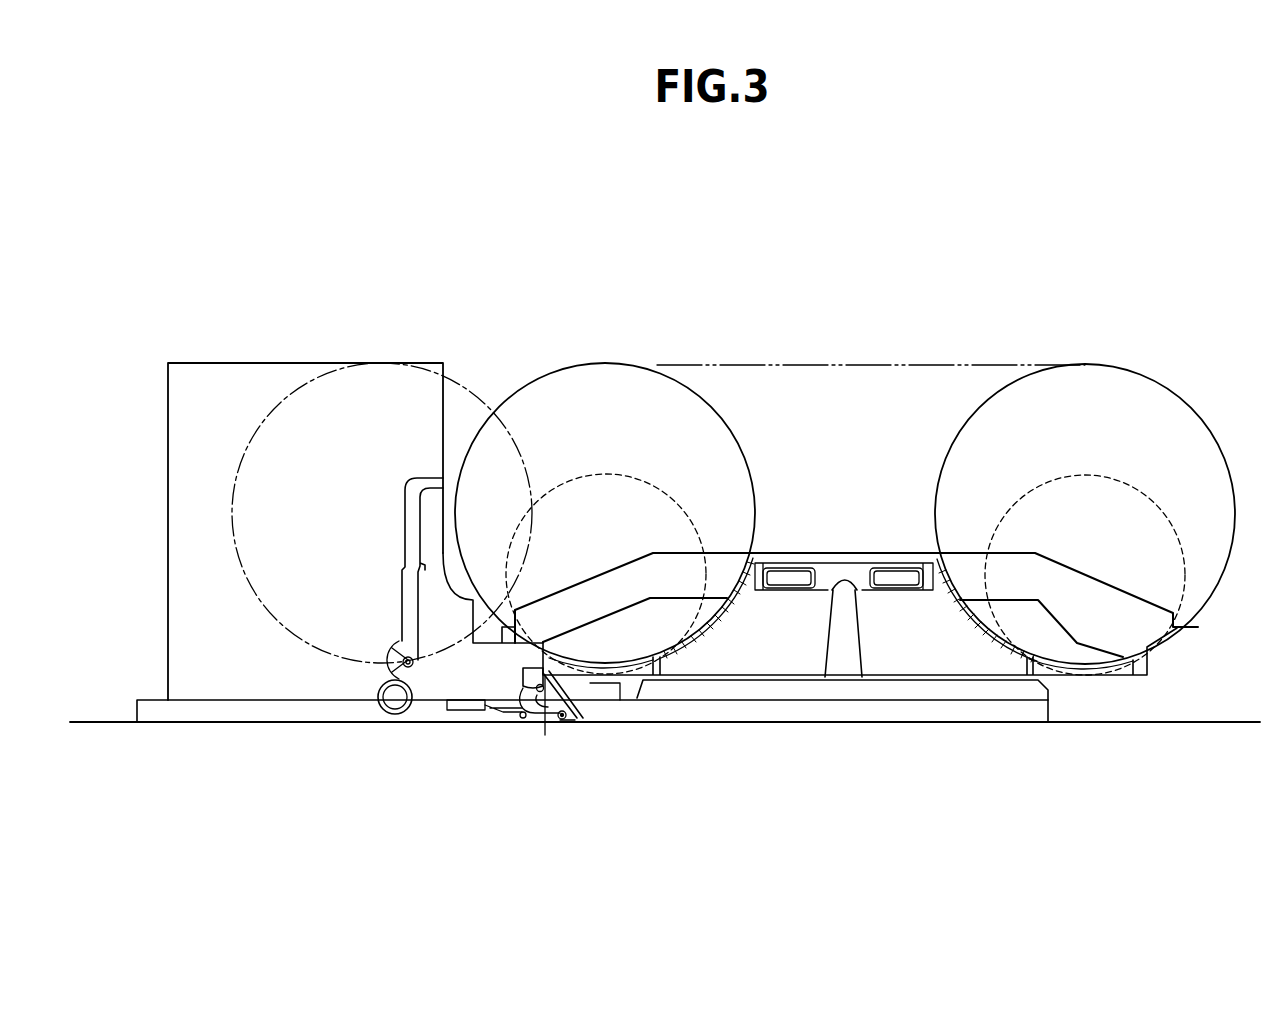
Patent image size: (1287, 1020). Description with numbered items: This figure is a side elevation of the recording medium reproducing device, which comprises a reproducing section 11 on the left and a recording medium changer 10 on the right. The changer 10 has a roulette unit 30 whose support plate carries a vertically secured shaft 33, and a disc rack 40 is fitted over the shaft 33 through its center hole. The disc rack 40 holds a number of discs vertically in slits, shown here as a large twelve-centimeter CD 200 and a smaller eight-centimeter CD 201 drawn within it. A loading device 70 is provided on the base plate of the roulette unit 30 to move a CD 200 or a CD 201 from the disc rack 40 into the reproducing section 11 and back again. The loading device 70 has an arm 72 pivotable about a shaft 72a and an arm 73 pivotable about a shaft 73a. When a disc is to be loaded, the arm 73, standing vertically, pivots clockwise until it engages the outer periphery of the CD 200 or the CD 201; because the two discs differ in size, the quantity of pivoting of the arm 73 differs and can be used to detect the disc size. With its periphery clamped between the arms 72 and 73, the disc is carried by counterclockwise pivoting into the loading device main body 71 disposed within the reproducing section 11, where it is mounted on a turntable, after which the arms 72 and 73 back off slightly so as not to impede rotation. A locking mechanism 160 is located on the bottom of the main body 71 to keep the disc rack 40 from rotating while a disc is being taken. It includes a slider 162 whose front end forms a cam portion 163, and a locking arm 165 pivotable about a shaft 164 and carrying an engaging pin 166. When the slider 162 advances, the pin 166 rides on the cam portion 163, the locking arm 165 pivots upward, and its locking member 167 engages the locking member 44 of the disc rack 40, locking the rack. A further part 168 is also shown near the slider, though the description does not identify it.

The recording medium changer 10 is at (857, 300).
The reproducing section 11 is at (355, 436).
The roulette unit 30 is at (842, 682).
The shaft 33 is at (860, 642).
The disc rack 40 is at (856, 659).
The locking member 44 is at (553, 667).
The loading device 70 is at (507, 777).
The loading device main body 71 is at (293, 363).
The arm 72 is at (620, 688).
The shaft 72a is at (545, 735).
The arm 73 is at (378, 578).
The shaft 73a is at (395, 657).
The locking mechanism 160 is at (532, 740).
The slider 162 is at (455, 715).
The cam portion 163 is at (503, 700).
The shaft 164 is at (563, 725).
The locking arm 165 is at (572, 720).
The engaging pin 166 is at (523, 720).
The locking member 167 is at (567, 710).
The roller 168 is at (433, 700).
The CD 200 is at (1152, 382).
The CD 201 is at (1167, 520).